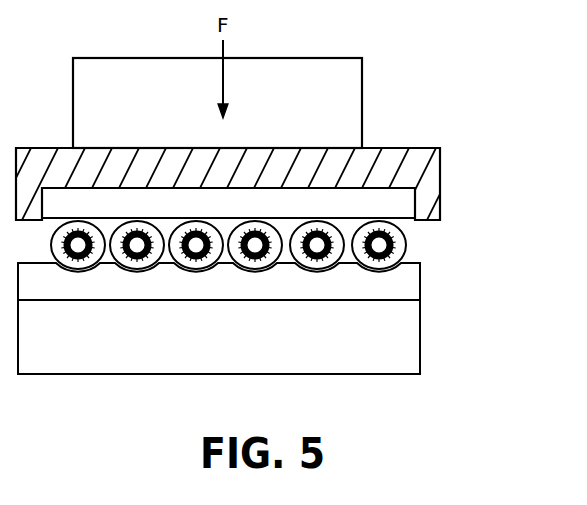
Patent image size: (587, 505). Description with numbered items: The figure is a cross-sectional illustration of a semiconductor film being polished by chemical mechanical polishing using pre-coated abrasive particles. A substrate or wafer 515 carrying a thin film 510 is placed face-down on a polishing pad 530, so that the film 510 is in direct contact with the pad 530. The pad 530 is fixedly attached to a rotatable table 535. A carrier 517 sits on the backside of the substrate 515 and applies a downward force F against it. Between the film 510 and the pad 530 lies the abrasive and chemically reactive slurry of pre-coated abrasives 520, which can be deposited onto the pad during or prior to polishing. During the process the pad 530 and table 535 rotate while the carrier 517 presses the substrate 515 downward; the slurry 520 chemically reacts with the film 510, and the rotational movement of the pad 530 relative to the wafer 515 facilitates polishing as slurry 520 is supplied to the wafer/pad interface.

The carrier 517 is at (348, 99).
The substrate or wafer 515 is at (440, 157).
The semiconductor film 510 is at (417, 235).
The pre-coated abrasives 520 is at (417, 250).
The polishing pad 530 is at (407, 283).
The rotatable table 535 is at (405, 340).